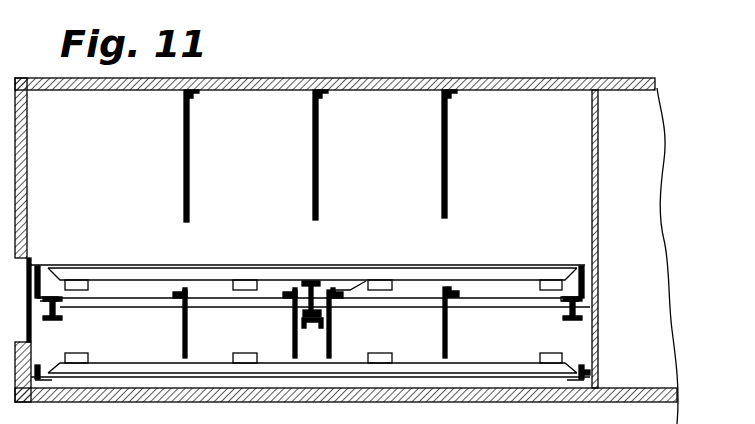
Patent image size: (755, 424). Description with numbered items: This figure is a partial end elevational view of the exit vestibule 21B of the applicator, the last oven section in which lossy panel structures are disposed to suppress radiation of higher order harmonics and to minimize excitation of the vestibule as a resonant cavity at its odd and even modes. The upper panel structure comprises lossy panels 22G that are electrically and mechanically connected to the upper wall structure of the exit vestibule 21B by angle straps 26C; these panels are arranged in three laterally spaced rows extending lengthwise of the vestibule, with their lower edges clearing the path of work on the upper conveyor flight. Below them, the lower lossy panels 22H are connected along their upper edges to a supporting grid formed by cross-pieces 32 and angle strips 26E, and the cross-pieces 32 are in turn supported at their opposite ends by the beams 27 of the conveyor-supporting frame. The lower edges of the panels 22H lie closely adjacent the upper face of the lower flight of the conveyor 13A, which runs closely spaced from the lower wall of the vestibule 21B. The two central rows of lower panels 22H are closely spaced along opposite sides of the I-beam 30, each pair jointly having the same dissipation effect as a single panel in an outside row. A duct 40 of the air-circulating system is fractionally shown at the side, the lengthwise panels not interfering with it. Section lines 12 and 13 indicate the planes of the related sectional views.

The exit vestibule 21B is at (537, 68).
The duct 40 is at (640, 166).
The upper lossy panels 22G is at (184, 197).
The angle straps 26C is at (194, 94).
The conveyor 13A is at (478, 267).
The cross-pieces 32 is at (146, 304).
The beams 27 is at (58, 315).
The lower lossy panels 22H is at (293, 343).
The angle strips 26E is at (178, 292).
The I-beam 30 is at (312, 282).
The section line 13- 13 is at (229, 78).
The section line 12- 12 is at (14, 268).